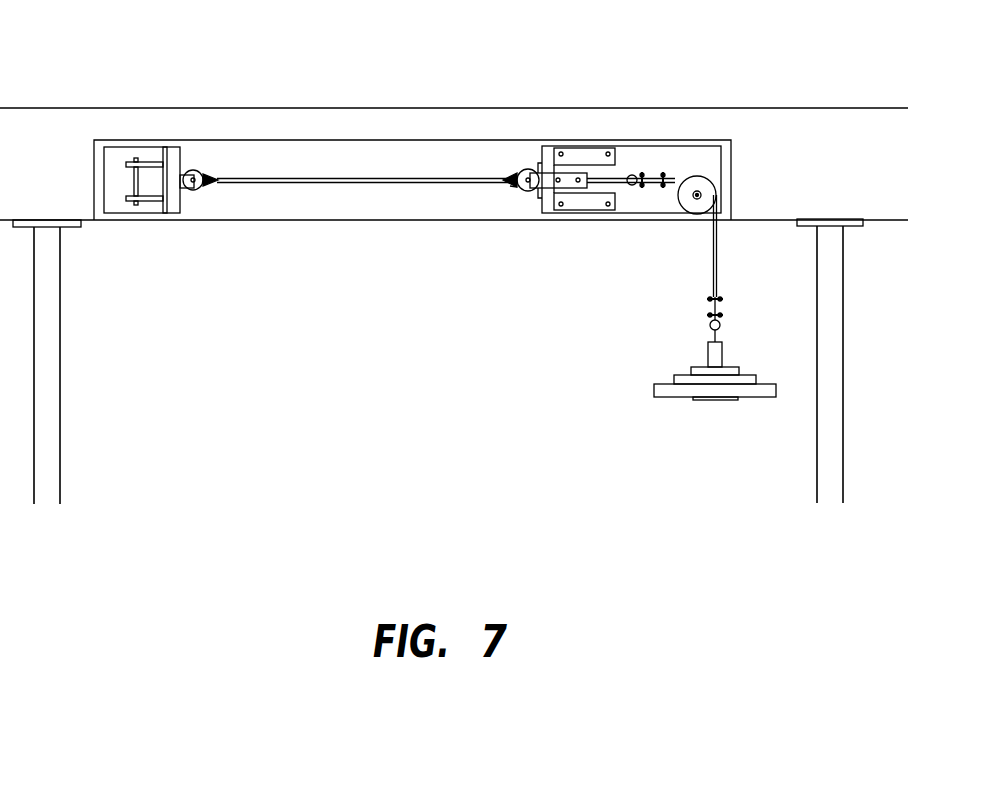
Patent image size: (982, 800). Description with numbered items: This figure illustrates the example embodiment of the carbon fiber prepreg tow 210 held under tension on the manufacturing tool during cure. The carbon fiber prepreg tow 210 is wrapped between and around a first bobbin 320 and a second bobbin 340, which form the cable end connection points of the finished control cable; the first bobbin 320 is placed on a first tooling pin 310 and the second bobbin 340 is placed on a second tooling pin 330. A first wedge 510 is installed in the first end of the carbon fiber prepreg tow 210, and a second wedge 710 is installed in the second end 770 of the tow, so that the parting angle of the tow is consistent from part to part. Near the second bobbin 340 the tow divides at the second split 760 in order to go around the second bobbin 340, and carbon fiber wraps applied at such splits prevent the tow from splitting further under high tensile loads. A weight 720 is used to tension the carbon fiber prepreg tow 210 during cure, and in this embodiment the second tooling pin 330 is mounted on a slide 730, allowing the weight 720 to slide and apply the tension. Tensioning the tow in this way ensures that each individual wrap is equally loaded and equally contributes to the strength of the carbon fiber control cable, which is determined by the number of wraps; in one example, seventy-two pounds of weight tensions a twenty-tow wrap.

The carbon fiber prepreg tow 210 is at (366, 177).
The first tooling pin 310 is at (195, 190).
The first bobbin 320 is at (194, 168).
The second tooling pin 330 is at (527, 191).
The second bobbin 340 is at (529, 170).
The first wedge 510 is at (207, 172).
The second wedge 710 is at (512, 172).
The weight 720 is at (680, 389).
The slide 730 is at (602, 183).
The second split 760 is at (508, 180).
The second end 770 is at (514, 186).